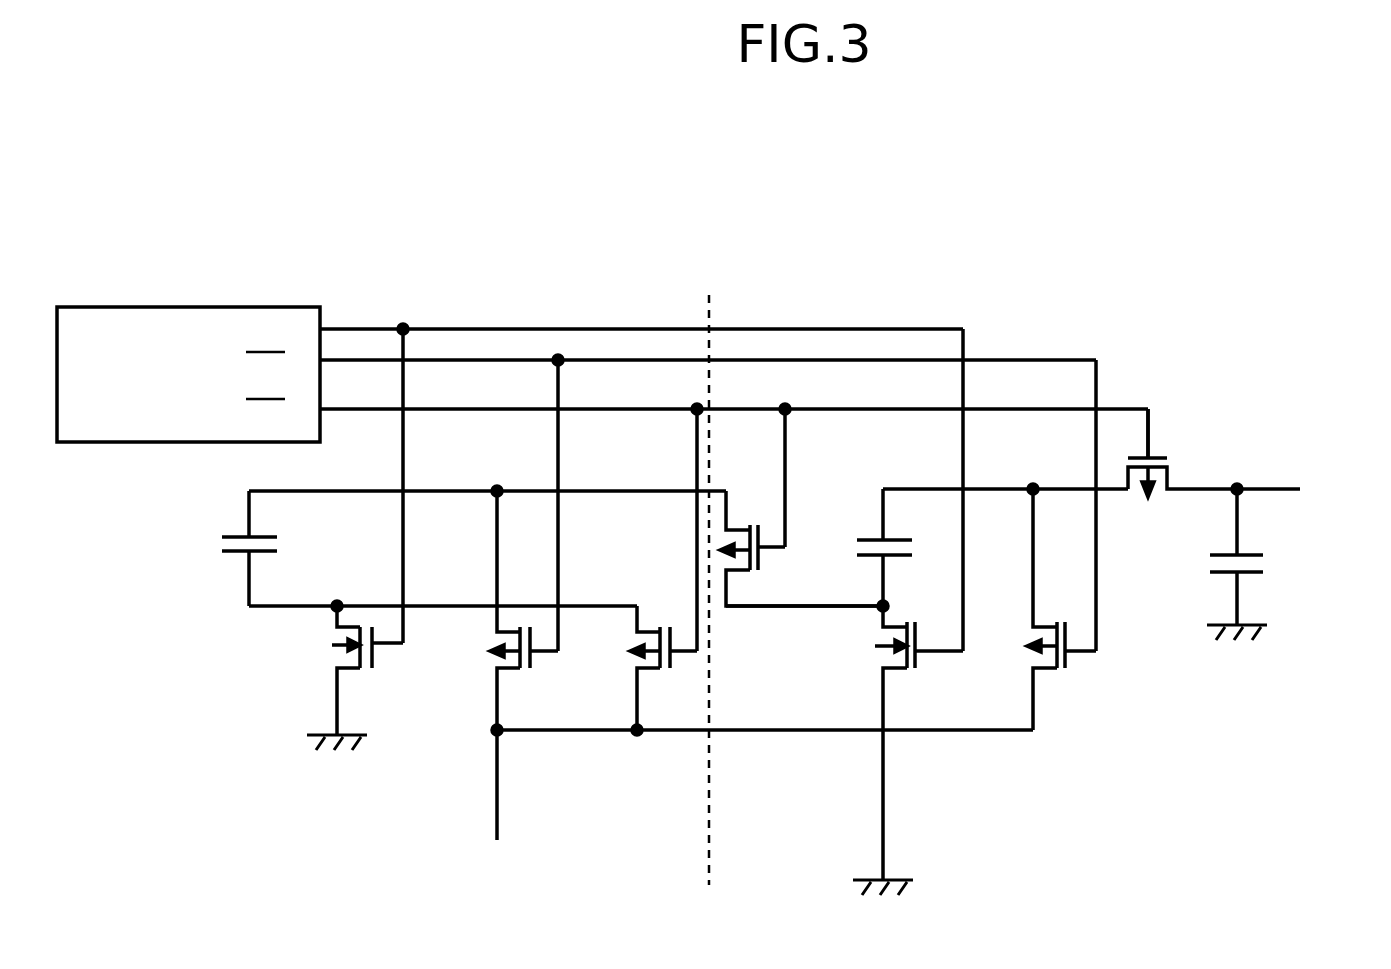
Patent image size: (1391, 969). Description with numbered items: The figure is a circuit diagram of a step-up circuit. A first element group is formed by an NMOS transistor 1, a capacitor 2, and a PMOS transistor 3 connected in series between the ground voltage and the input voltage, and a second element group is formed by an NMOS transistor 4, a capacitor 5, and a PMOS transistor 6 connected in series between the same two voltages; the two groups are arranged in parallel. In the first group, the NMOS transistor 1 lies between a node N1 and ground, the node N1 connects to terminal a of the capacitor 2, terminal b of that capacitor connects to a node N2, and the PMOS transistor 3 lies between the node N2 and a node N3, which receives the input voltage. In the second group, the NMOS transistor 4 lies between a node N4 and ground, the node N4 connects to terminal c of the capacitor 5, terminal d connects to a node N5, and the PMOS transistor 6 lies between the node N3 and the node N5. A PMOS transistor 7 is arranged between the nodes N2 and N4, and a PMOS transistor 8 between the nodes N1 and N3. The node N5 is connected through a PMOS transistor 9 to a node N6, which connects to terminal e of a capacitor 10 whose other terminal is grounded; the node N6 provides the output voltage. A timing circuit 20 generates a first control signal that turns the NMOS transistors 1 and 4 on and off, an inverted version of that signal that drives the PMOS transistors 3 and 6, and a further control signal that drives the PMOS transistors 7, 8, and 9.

The timing circuit 20 is at (240, 306).
The NMOS transistor 1 is at (330, 650).
The capacitor 2 is at (222, 543).
The PMOS transistor 3 is at (535, 672).
The NMOS transistor 4 is at (880, 650).
The capacitor 5 is at (897, 537).
The PMOS transistor 6 is at (1025, 652).
The PMOS transistor 7 is at (756, 527).
The PMOS transistor 8 is at (660, 675).
The PMOS transistor 9 is at (1175, 458).
The capacitor 10 is at (1268, 560).
The node N1 is at (338, 604).
The node N2 is at (497, 489).
The node N3 is at (495, 733).
The node N4 is at (880, 608).
The node N5 is at (1034, 487).
The node N6 is at (1238, 487).